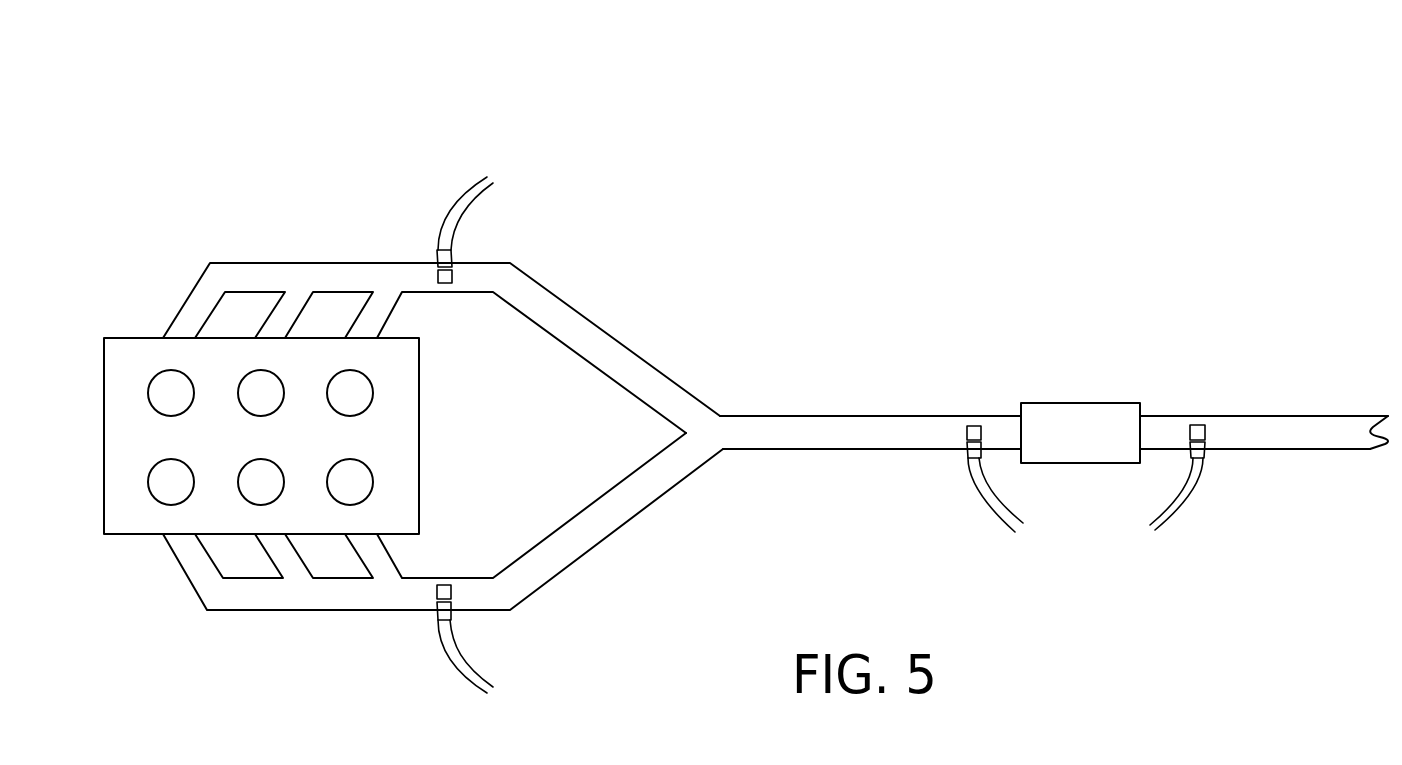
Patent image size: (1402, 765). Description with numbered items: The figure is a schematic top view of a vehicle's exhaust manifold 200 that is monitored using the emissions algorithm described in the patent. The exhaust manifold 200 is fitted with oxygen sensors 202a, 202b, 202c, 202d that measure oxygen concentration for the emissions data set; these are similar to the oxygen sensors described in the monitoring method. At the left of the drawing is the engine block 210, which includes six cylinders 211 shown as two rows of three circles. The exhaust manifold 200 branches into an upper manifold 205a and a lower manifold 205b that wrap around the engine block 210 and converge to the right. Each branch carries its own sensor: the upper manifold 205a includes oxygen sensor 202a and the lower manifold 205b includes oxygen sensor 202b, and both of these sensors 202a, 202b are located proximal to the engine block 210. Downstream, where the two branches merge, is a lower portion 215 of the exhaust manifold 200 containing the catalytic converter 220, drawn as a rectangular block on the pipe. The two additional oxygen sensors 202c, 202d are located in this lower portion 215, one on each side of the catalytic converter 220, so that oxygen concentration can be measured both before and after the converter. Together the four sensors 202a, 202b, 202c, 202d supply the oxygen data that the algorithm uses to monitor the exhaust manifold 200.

The exhaust manifold 200 is at (903, 213).
The oxygen sensor 202a is at (470, 192).
The oxygen sensor 202b is at (437, 640).
The oxygen sensor 202c is at (970, 488).
The oxygen sensor 202d is at (1198, 495).
The upper manifold 205a is at (582, 318).
The lower manifold 205b is at (610, 517).
The engine block 210 is at (418, 413).
The cylinders 211 is at (255, 400).
The lower portion 215 is at (888, 425).
The catalytic converter 220 is at (1100, 410).